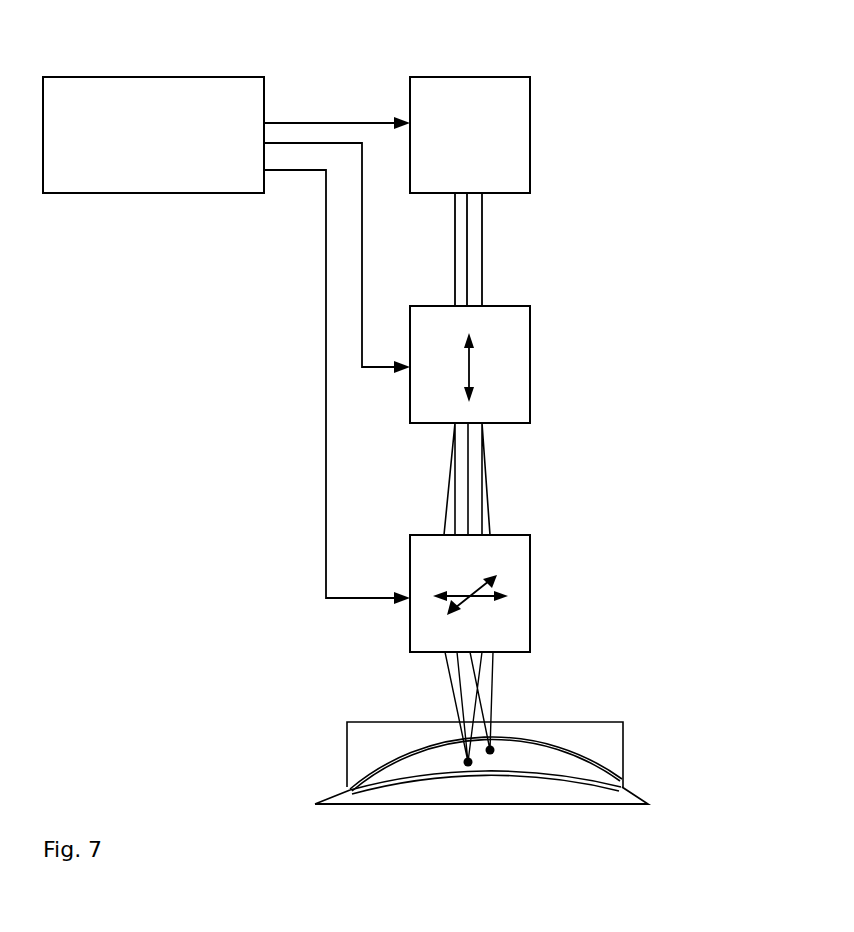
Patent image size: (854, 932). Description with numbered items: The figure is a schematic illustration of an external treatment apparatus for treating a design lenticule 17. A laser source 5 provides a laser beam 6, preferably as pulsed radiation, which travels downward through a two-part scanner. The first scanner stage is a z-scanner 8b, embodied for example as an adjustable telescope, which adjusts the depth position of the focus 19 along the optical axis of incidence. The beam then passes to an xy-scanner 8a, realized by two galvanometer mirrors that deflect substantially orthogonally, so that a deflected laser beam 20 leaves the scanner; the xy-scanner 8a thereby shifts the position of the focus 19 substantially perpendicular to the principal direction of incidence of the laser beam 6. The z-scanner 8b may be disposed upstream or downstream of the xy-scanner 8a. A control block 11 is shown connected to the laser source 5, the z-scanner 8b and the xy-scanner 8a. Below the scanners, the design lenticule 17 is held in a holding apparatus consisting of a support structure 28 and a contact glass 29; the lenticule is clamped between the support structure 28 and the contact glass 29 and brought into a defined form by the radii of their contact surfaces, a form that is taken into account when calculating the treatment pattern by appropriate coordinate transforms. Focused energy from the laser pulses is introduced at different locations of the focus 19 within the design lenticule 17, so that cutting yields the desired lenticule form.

The control unit 11 is at (153, 193).
The laser source 5 is at (530, 137).
The laser beam 6 is at (482, 250).
The z-scanner 8b is at (530, 362).
The deflected laser beam 20 is at (485, 478).
The xy-scanner 8a is at (530, 583).
The contact glass 29 is at (500, 720).
The focus 19 is at (490, 750).
The design lenticule 17 is at (567, 770).
The support structure 28 is at (577, 797).